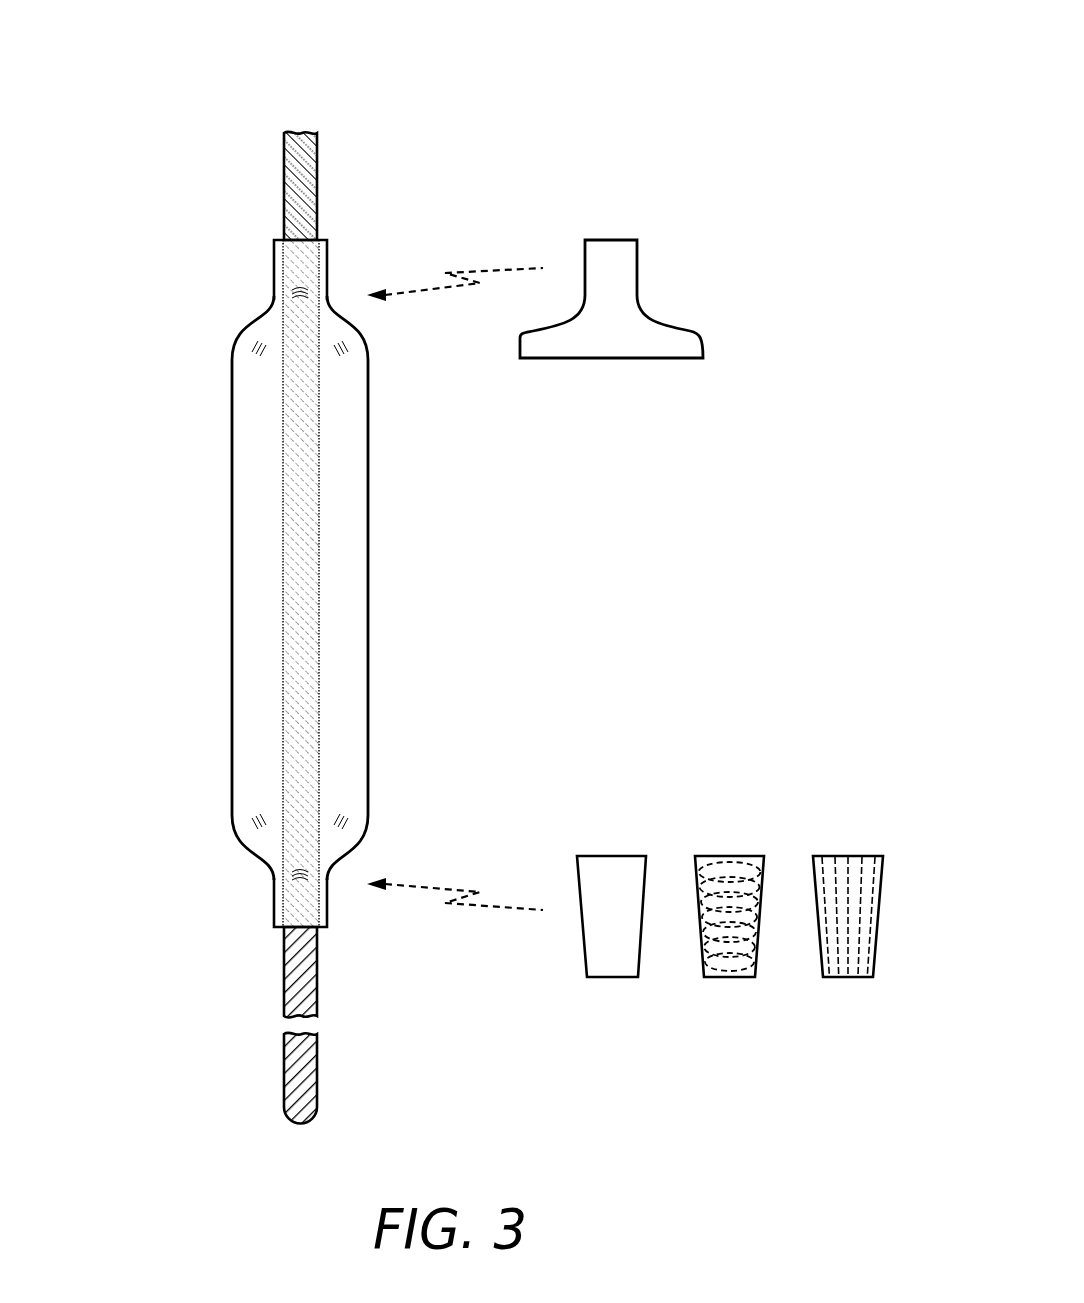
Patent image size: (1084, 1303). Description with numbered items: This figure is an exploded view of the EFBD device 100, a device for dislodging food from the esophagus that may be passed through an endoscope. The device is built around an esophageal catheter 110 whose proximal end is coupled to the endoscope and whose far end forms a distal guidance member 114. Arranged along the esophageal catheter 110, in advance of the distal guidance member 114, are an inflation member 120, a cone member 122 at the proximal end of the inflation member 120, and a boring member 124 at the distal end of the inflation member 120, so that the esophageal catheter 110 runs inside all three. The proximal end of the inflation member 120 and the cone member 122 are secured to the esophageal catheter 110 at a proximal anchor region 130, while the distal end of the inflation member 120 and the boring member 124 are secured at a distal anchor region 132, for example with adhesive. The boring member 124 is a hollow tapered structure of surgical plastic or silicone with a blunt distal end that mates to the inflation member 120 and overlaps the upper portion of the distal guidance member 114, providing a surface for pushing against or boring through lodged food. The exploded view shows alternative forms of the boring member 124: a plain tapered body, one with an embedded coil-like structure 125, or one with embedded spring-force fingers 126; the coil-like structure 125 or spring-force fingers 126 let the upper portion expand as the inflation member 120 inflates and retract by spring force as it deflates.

The EFBD device 100 is at (266, 76).
The esophageal catheter 110 is at (317, 203).
The distal guidance member 114 is at (317, 1075).
The inflation member 120 is at (370, 580).
The cone member 122 is at (703, 345).
The boring member 124 is at (613, 977).
The coil-like structure 125 is at (727, 878).
The spring-force fingers 126 is at (860, 900).
The proximal anchor region 130 is at (250, 307).
The distal anchor region 132 is at (250, 932).